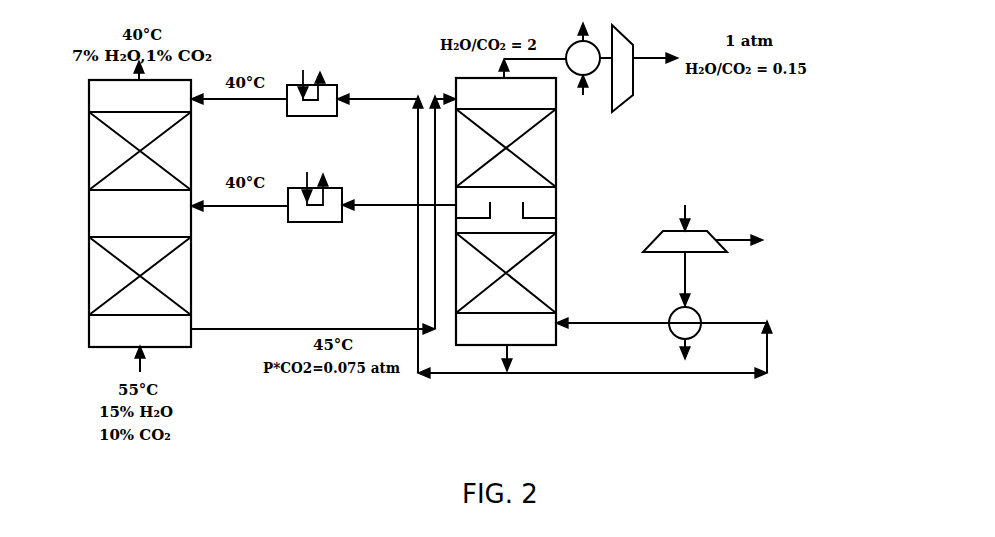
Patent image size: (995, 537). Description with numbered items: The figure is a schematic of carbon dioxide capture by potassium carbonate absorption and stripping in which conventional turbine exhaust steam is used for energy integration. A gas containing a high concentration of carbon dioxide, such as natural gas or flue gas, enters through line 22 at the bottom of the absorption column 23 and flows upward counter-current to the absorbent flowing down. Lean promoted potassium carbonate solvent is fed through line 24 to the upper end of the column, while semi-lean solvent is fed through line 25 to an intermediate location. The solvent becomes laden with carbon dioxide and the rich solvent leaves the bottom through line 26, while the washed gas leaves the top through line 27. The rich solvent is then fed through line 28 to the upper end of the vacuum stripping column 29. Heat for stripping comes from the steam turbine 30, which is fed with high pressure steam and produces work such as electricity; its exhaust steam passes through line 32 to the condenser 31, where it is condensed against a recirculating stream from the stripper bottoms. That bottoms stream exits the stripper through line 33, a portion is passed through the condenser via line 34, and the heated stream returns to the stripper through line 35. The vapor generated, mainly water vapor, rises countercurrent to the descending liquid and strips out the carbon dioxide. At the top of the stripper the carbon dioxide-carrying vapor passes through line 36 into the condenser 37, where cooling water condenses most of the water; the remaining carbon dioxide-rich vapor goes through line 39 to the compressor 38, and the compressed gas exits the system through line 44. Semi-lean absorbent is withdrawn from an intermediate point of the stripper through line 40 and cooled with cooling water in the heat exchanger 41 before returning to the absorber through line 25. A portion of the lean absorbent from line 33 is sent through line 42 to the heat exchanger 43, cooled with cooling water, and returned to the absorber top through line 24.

The line 22 is at (140, 360).
The absorption column 23 is at (89, 219).
The line 24 is at (215, 100).
The line 25 is at (215, 207).
The line 26 is at (212, 330).
The line 27 is at (135, 78).
The line 28 is at (447, 94).
The vacuum stripping column 29 is at (556, 165).
The steam turbine 30 is at (655, 246).
The condenser 31 is at (670, 318).
The line 32 is at (685, 272).
The line 33 is at (510, 356).
The line 34 is at (614, 375).
The line 35 is at (612, 325).
The line 36 is at (500, 68).
The condenser 37 is at (575, 50).
The compressor 38 is at (633, 97).
The line 39 is at (610, 40).
The line 40 is at (380, 206).
The heat exchanger 41 is at (315, 222).
The line 42 is at (380, 100).
The heat exchanger 43 is at (312, 116).
The line 44 is at (660, 60).